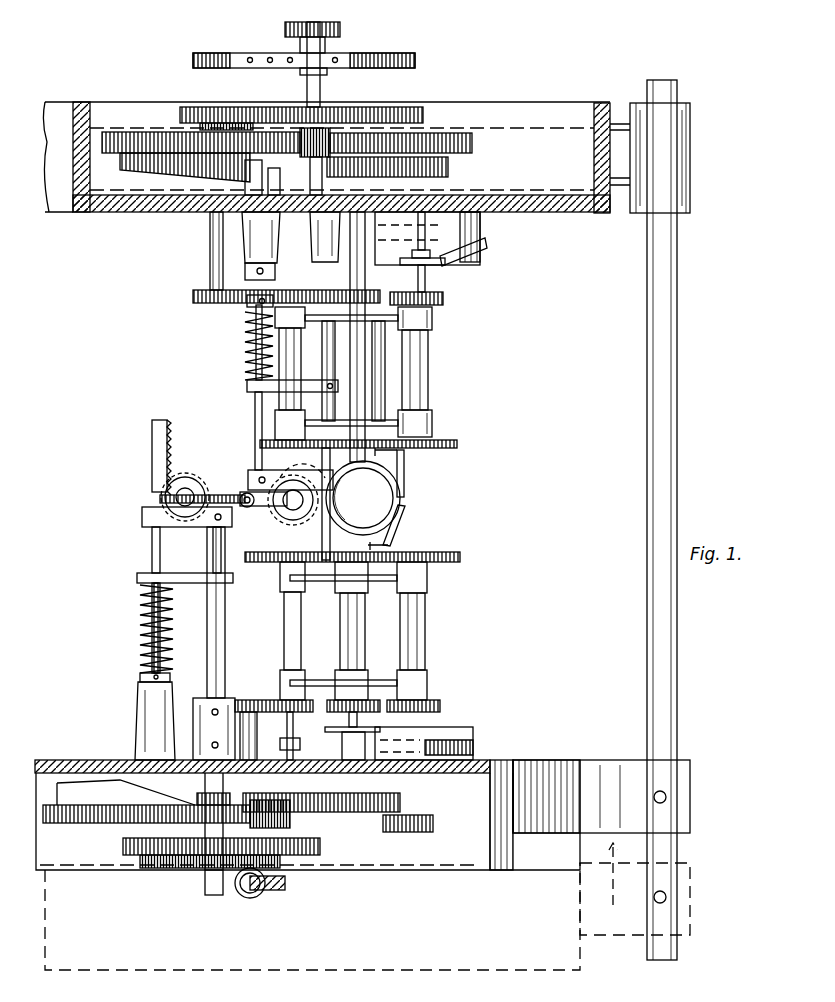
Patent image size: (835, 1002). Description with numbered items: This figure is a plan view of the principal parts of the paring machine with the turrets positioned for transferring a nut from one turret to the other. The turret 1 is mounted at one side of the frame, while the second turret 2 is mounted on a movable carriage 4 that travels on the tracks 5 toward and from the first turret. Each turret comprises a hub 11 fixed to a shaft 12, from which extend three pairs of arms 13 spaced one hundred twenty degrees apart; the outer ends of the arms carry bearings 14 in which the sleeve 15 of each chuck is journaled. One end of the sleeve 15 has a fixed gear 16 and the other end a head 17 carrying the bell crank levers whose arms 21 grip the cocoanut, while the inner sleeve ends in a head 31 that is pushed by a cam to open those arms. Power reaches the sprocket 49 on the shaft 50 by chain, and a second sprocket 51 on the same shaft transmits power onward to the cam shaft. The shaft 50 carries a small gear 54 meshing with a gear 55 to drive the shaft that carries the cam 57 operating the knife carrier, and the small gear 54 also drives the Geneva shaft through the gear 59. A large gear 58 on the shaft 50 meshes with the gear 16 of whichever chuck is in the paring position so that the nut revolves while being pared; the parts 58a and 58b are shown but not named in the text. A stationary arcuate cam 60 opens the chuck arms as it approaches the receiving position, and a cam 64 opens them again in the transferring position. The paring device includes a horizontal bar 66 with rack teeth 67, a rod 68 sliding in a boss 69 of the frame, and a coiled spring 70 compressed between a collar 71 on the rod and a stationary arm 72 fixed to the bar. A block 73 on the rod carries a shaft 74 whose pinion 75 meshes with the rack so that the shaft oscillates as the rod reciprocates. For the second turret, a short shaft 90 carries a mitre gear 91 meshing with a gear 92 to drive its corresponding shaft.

The turret 1 is at (523, 122).
The second turret 2 is at (465, 862).
The movable carriage 4 is at (540, 762).
The tracks or rods 5 is at (677, 690).
The hub 11 is at (385, 392).
The shaft 12 is at (365, 268).
The pairs of arms 13 is at (388, 325).
The bearings 14 is at (432, 322).
The sleeve 15 is at (428, 368).
The fixed gear 16 is at (443, 298).
The head 17 is at (455, 450).
The arm 21 is at (405, 470).
The head 31 is at (430, 262).
The sprocket 49 is at (352, 58).
The shaft 50 is at (312, 78).
The second sprocket 51 is at (318, 24).
The small gear 54 is at (310, 165).
The gear 55 is at (125, 132).
The cam 57 is at (147, 170).
The large gear 58 is at (385, 107).
The pinion 58a is at (207, 123).
The gear 58b is at (193, 296).
The gear 59 is at (450, 133).
The stationary arcuate cam 60 is at (487, 243).
The cam 64 is at (287, 745).
The bar 66 is at (262, 368).
The rack teeth 67 is at (305, 520).
The rod 68 is at (255, 418).
The boss 69 is at (245, 243).
The coiled spring 70 is at (250, 345).
The collar 71 is at (247, 305).
The stationary arm 72 is at (247, 388).
The head or block 73 is at (262, 470).
The shaft 74 is at (275, 507).
The pinion 75 is at (325, 488).
The short shaft 90 is at (280, 890).
The mitre gear 91 is at (248, 898).
The gear 92 is at (170, 868).